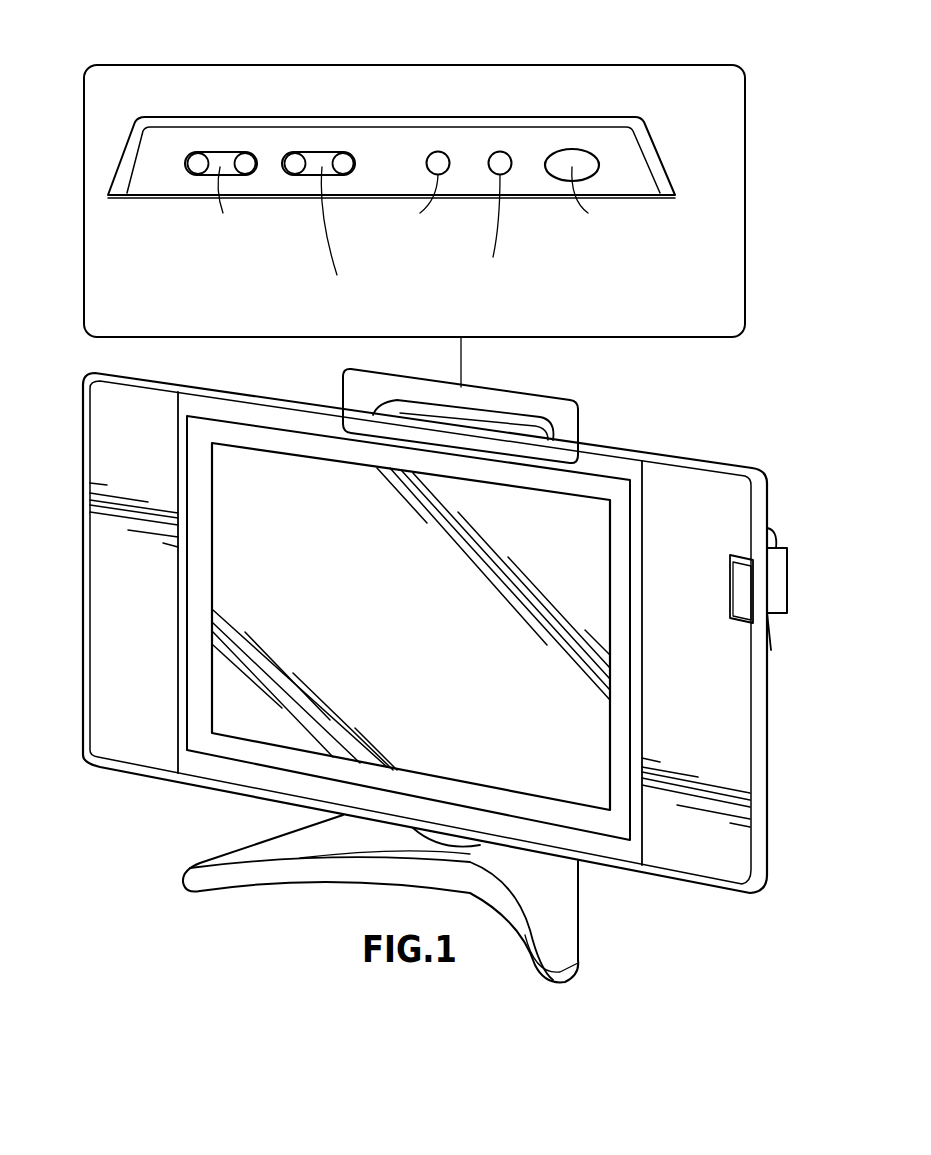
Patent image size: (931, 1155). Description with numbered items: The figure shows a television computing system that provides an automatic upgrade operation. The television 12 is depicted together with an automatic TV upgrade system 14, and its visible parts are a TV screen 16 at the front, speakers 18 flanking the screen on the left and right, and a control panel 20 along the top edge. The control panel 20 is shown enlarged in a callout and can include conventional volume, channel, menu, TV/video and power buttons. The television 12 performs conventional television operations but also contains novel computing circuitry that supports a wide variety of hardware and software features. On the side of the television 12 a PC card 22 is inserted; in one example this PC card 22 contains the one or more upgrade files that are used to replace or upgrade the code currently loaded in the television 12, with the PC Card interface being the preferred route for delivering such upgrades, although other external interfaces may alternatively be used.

The television 12 is at (723, 437).
The automatic TV upgrade system 14 is at (776, 530).
The TV screen 16 is at (613, 445).
The speakers 18 is at (110, 603).
The control panel 20 is at (417, 65).
The PC card 22 is at (787, 580).